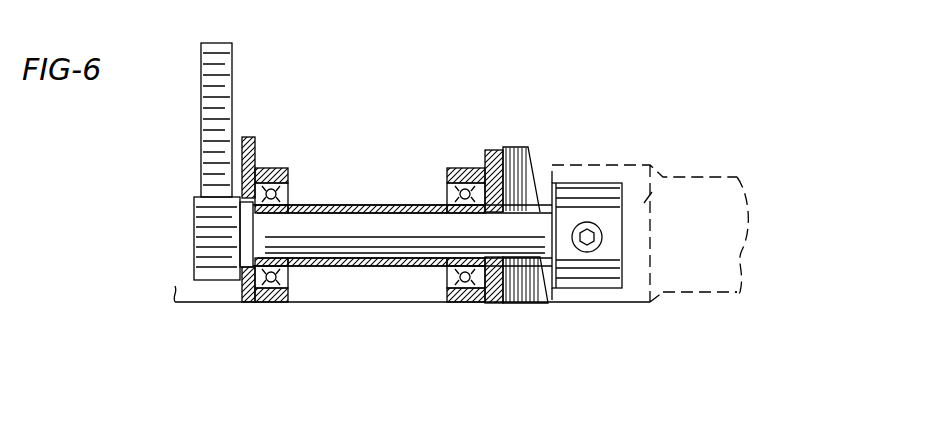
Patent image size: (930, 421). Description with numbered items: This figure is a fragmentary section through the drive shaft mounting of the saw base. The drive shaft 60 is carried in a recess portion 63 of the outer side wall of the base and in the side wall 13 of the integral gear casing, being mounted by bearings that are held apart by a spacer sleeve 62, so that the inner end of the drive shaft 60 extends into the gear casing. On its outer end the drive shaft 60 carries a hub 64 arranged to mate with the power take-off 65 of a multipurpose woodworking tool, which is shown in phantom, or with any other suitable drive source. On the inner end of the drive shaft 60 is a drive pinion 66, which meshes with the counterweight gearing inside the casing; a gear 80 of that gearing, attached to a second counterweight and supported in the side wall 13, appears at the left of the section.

The side wall 13 is at (252, 155).
The drive shaft 60 is at (390, 247).
The spacer sleeve 62 is at (447, 198).
The recess portion 63 is at (495, 160).
The hub 64 is at (587, 195).
The power take-off 65 is at (668, 185).
The drive pinion 66 is at (205, 238).
The gear 80 is at (200, 124).